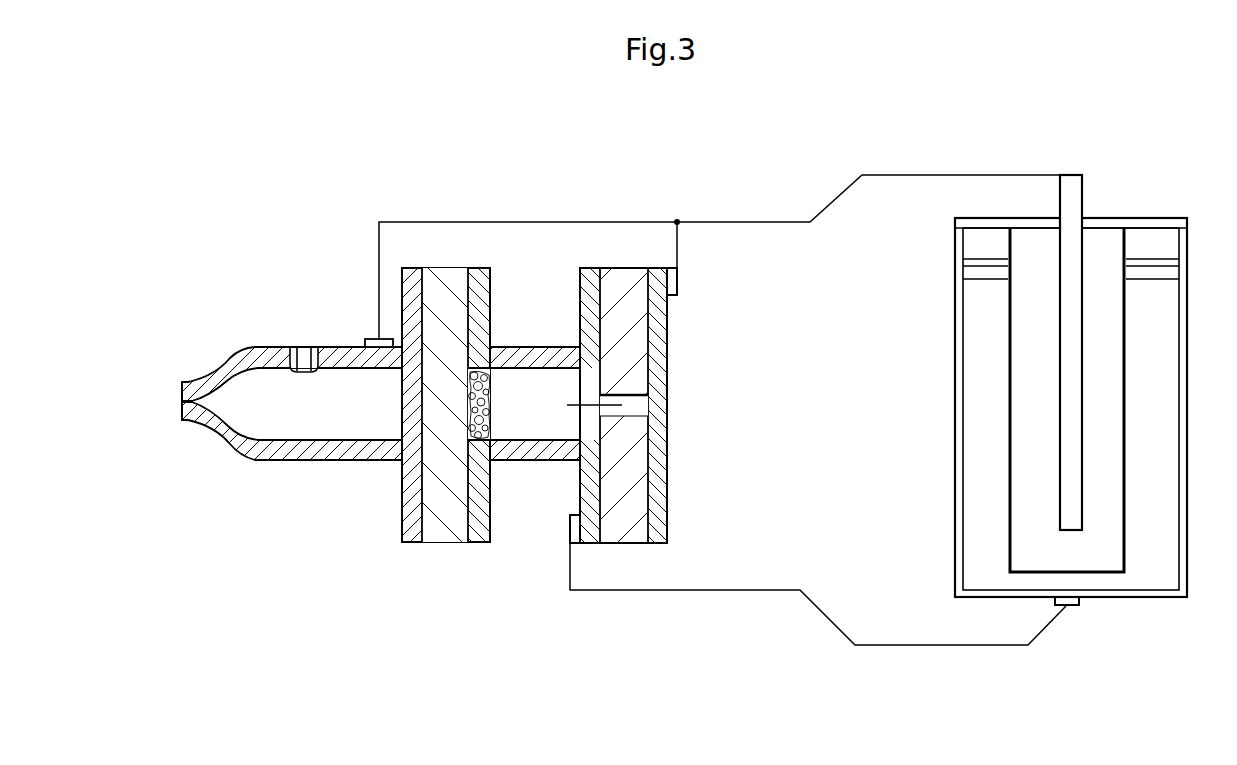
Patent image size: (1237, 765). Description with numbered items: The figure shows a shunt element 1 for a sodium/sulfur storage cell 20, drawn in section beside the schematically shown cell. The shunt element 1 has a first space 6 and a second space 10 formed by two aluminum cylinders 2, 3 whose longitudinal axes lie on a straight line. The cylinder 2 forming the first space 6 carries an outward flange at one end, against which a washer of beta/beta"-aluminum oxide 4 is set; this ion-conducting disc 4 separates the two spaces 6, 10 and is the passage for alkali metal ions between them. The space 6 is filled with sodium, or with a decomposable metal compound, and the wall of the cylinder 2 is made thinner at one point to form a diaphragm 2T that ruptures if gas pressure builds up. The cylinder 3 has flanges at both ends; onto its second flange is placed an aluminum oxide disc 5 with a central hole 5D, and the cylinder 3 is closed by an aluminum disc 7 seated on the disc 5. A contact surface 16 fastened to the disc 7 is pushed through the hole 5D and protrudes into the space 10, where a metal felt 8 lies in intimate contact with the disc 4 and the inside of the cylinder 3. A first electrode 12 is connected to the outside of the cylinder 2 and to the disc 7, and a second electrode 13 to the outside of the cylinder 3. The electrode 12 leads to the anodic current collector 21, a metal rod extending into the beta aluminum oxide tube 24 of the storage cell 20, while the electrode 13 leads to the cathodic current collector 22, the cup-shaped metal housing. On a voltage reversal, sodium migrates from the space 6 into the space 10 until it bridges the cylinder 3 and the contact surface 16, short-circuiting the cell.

The shunt element 1 is at (218, 352).
The aluminum cylinder 2 is at (360, 448).
The diaphragm 2T is at (302, 340).
The aluminum cylinder 3 is at (478, 530).
The beta/beta"-aluminum oxide disc 4 is at (433, 527).
The aluminum oxide disc 5 is at (635, 336).
The central hole 5D is at (632, 400).
The first space 6 is at (283, 432).
The aluminum disc 7 is at (658, 268).
The metal felt 8 is at (478, 376).
The second space 10 is at (538, 375).
The first electrode 12 is at (722, 222).
The second electrode 13 is at (690, 590).
The contact surface 16 is at (617, 408).
The storage cell 20 is at (1188, 430).
The anodic current collector 21 is at (1075, 206).
The cathodic current collector 22 is at (1085, 592).
The tube of beta aluminum oxide 24 is at (1126, 352).